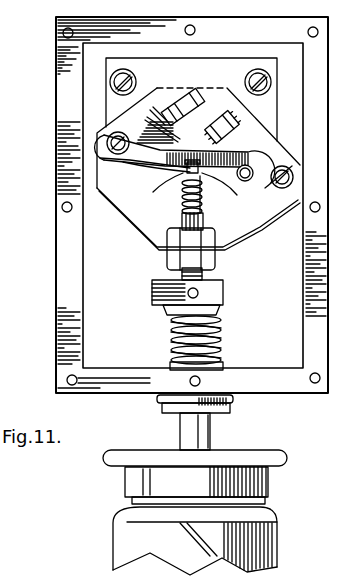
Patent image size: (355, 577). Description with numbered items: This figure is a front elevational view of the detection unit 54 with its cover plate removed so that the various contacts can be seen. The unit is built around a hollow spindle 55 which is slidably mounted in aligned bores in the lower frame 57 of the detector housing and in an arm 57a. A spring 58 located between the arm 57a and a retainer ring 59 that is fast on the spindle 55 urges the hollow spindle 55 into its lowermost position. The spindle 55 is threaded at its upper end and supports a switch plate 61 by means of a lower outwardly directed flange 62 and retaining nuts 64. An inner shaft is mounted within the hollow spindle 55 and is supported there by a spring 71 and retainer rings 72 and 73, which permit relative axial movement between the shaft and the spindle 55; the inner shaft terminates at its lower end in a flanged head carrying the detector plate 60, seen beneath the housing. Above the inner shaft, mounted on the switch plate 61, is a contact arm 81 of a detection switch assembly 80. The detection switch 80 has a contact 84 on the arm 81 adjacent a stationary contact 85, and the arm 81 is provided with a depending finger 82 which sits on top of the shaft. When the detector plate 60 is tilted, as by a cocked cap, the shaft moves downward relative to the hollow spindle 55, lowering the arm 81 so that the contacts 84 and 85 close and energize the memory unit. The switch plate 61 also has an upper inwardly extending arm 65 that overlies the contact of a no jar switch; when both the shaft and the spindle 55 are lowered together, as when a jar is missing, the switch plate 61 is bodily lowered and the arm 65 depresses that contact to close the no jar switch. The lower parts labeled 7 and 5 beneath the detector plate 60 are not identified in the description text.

The detection unit 54 is at (50, 99).
The lower frame 57 is at (267, 368).
The arm 57a is at (152, 298).
The spring 58 is at (172, 330).
The retainer ring 59 is at (168, 365).
The hollow spindle 55 is at (185, 428).
The detector plate 60 is at (287, 453).
The knob body 7 is at (268, 480).
The base 5 is at (277, 532).
The switch plate 61 is at (138, 202).
The lower outwardly directed flange 62 is at (162, 247).
The retaining nuts 64 is at (236, 251).
The upper inwardly extending arm 65 is at (215, 78).
The spring 71 is at (200, 203).
The retainer ring 72 is at (180, 217).
The retainer ring 73 is at (187, 197).
The detection switch assembly 80 is at (257, 145).
The contact arm 81 is at (185, 165).
The depending finger 82 is at (213, 183).
The contact 84 is at (157, 155).
The stationary contact 85 is at (163, 162).